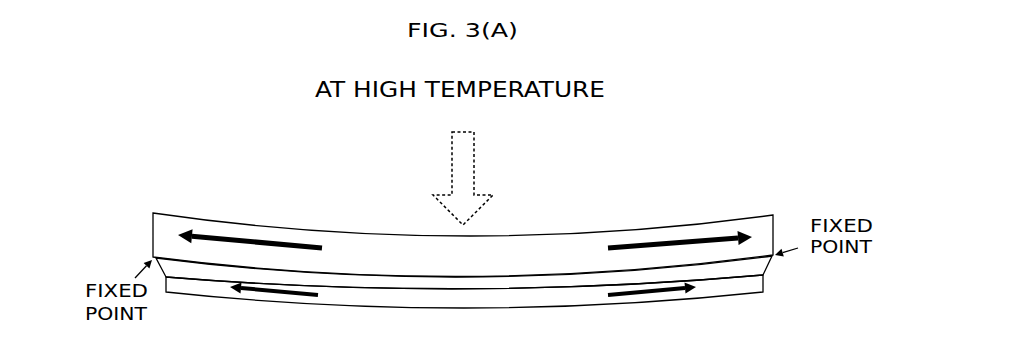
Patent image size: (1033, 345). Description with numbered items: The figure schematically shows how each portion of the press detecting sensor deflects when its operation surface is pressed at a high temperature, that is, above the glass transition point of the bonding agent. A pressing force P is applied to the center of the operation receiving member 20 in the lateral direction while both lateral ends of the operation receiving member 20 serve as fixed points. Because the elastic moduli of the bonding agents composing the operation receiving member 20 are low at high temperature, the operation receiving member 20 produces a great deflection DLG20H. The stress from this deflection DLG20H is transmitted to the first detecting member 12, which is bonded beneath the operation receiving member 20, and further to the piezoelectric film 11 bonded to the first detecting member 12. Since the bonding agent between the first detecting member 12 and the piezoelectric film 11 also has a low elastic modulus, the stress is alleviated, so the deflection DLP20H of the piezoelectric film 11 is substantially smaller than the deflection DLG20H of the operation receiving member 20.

The operation receiving member 20 is at (782, 221).
The first detecting member 12 is at (773, 267).
The piezoelectric film 11 is at (772, 288).
The pressing force P is at (463, 168).
The deflection of the operation receiving member at high temperature DLG20H is at (210, 233).
The deflection of the piezoelectric film at high temperature DLP20H is at (293, 296).